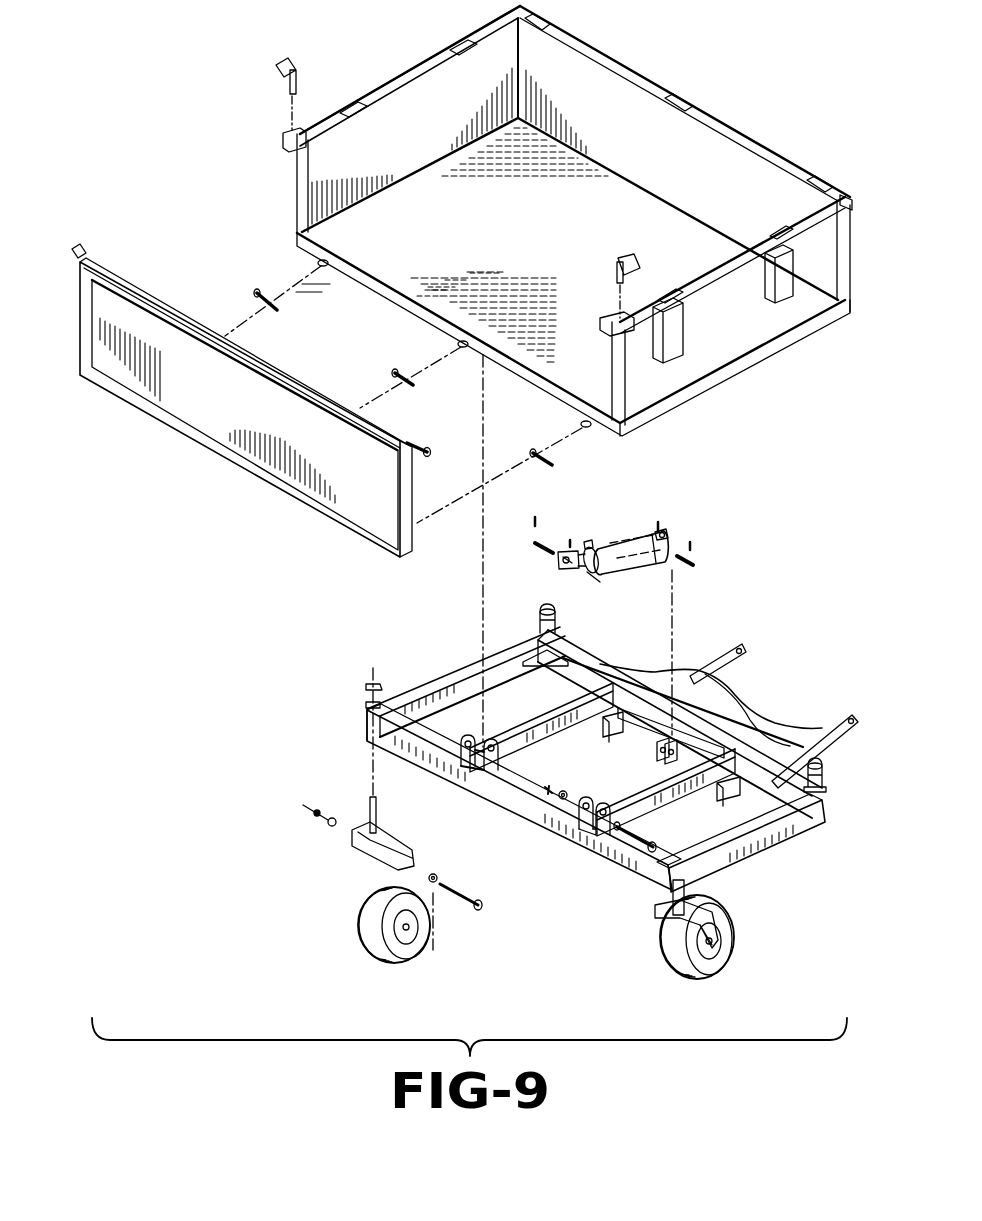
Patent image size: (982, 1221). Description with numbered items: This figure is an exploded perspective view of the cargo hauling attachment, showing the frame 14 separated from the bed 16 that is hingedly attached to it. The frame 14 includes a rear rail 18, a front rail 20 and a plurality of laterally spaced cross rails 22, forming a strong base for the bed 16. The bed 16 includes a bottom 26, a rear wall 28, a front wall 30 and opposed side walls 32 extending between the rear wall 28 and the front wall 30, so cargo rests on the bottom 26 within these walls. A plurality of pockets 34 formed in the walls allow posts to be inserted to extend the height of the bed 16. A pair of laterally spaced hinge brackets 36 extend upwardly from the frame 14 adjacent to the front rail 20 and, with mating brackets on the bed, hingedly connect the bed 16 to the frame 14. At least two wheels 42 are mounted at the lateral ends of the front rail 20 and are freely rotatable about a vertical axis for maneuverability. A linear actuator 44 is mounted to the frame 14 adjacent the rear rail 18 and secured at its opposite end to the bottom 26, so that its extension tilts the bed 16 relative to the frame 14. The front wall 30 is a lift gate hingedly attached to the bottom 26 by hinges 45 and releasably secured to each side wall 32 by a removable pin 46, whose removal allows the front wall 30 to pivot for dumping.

The frame 14 is at (577, 784).
The bed 16 is at (668, 422).
The rear rail 18 is at (778, 780).
The front rail 20 is at (537, 815).
The cross rails 22 is at (443, 688).
The bottom 26 is at (527, 232).
The rear wall 28 is at (632, 162).
The front wall 30 is at (206, 407).
The side walls 32 is at (404, 132).
The pockets 34 is at (352, 108).
The hinge brackets 36 is at (480, 770).
The wheels 42 is at (362, 916).
The linear actuator 44 is at (627, 540).
The hinges 45 is at (322, 270).
The removable pin 46 is at (279, 79).